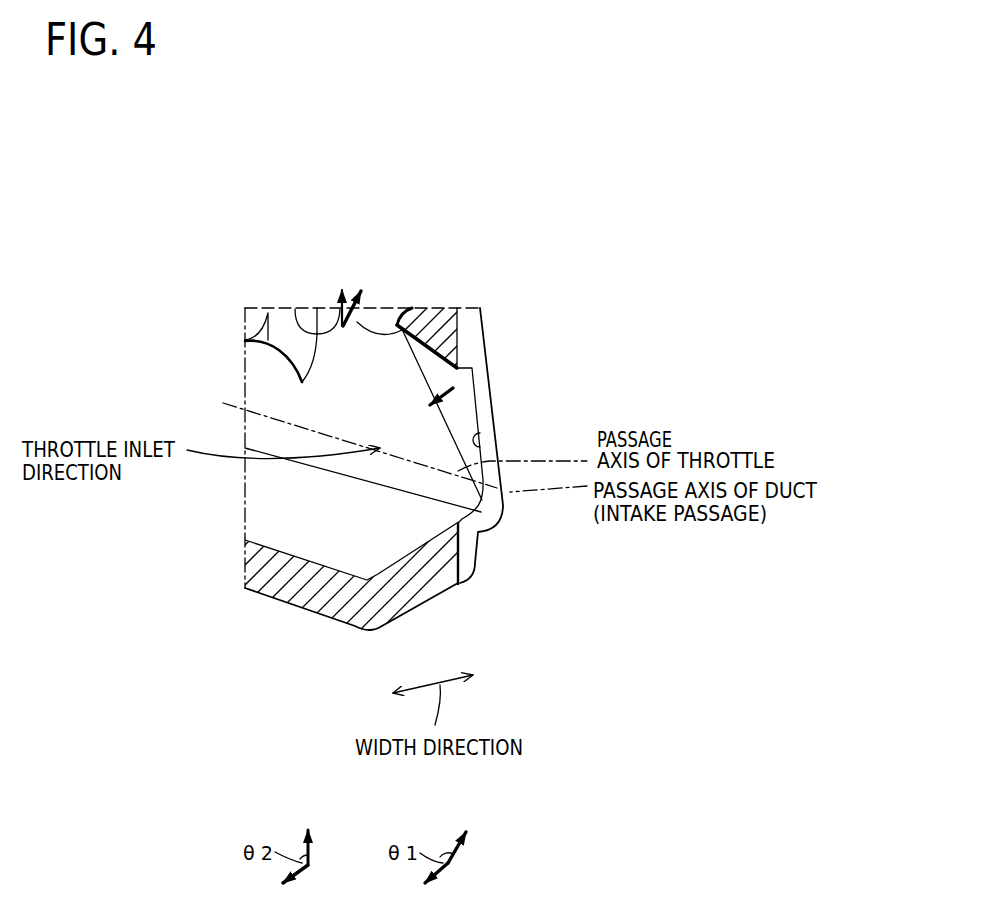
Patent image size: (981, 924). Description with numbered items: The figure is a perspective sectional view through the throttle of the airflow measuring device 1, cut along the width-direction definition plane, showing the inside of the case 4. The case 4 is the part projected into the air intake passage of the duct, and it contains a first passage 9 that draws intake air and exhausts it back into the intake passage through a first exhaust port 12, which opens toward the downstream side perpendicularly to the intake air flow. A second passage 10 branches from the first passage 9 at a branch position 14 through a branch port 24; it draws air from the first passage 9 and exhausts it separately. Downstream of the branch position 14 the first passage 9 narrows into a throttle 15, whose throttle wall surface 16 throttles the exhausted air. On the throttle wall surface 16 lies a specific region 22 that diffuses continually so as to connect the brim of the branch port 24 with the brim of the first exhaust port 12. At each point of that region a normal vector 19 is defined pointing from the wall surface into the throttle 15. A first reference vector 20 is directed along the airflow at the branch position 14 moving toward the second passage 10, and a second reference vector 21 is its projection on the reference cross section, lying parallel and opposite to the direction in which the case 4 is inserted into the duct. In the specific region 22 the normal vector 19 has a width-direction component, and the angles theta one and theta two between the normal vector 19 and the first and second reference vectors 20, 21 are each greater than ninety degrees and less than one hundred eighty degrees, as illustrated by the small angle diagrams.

The airflow measuring device 1 is at (560, 243).
The case 4 is at (203, 290).
The first passage 9 is at (257, 500).
The second passage 10 is at (320, 315).
The first exhaust port 12 is at (487, 443).
The branch position 14 is at (295, 312).
The throttle 15 is at (407, 522).
The throttle wall surface 16 is at (453, 490).
The normal vector 19 is at (450, 382).
The first reference vector 20 is at (374, 306).
The second reference vector 21 is at (337, 316).
The specific region 22 is at (465, 405).
The branch port 24 is at (422, 322).